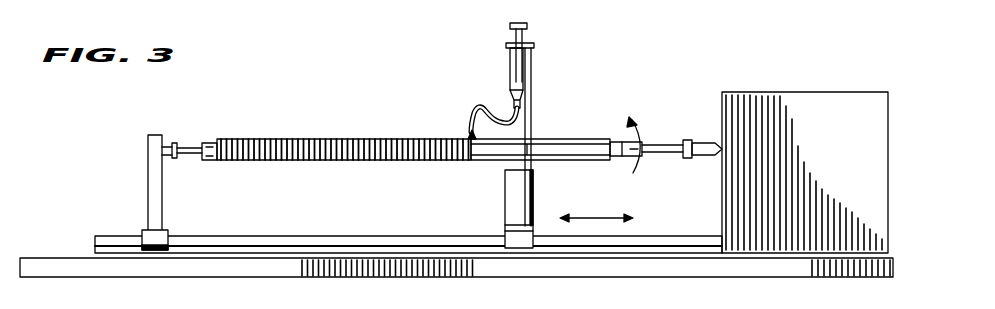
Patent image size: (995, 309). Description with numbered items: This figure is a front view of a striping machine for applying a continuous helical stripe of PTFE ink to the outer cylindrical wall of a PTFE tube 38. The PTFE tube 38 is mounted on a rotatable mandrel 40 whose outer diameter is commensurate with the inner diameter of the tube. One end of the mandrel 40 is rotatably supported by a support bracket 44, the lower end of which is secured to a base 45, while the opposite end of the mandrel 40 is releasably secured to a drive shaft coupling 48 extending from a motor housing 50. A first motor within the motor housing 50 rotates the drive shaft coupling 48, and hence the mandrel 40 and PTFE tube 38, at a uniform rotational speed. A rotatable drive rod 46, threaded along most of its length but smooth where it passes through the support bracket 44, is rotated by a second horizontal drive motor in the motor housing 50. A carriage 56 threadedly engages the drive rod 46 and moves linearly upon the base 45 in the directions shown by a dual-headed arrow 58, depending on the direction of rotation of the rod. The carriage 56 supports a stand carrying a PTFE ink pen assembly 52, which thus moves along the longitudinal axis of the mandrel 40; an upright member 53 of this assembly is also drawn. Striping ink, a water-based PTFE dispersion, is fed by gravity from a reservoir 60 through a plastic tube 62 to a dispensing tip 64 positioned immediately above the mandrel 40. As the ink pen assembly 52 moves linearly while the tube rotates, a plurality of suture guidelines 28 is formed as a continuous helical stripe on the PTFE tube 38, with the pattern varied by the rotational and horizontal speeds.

The suture guidelines 28 is at (317, 126).
The PTFE tube 38 is at (577, 139).
The rotatable mandrel 40 is at (213, 122).
The support bracket 44 is at (155, 177).
The base 45 is at (203, 266).
The rotatable drive rod 46 is at (267, 216).
The drive shaft coupling 48 is at (702, 142).
The motor housing 50 is at (802, 92).
The PTFE ink pen assembly 52 is at (469, 68).
The support arm 53 is at (533, 107).
The carriage 56 is at (513, 185).
The dual-headed arrow 58 is at (600, 217).
The reservoir 60 is at (510, 60).
The plastic tube 62 is at (476, 107).
The dispensing tip 64 is at (469, 132).